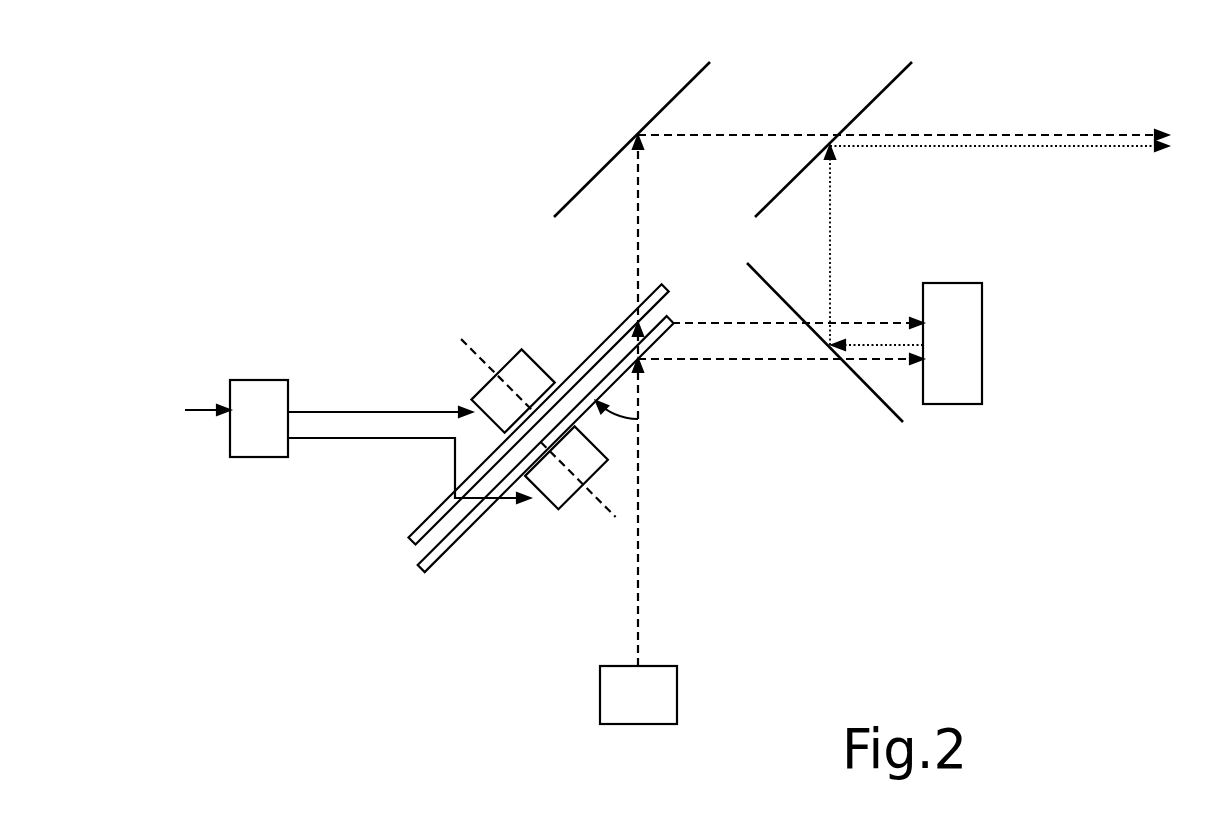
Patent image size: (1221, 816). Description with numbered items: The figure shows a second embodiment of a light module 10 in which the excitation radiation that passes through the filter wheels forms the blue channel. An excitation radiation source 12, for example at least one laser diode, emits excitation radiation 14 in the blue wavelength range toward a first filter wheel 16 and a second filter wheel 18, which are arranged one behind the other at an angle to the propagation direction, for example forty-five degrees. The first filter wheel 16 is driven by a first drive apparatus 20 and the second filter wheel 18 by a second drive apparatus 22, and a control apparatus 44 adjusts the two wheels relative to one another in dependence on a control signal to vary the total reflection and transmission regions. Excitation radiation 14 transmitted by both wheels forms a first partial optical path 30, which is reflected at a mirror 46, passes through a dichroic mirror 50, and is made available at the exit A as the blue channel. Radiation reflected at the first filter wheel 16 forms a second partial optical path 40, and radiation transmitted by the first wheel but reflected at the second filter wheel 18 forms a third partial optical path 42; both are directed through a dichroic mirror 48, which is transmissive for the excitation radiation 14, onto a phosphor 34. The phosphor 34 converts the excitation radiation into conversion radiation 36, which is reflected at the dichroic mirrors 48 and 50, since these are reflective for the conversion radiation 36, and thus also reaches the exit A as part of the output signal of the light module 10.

The light module 10 is at (371, 292).
The excitation radiation source 12 is at (677, 695).
The excitation radiation 14 is at (640, 500).
The first filter wheel 16 is at (447, 543).
The second filter wheel 18 is at (422, 523).
The first drive apparatus 20 is at (558, 495).
The second drive apparatus 22 is at (480, 385).
The first partial optical path 30 is at (640, 225).
The phosphor 34 is at (947, 295).
The conversion radiation 36 is at (873, 345).
The second partial optical path 40 is at (710, 360).
The third partial optical path 42 is at (697, 322).
The control apparatus 44 is at (260, 390).
The mirror 46 is at (597, 178).
The dichroic mirror 48 is at (876, 398).
The dichroic mirror 50 is at (877, 93).
The exit A is at (1171, 93).